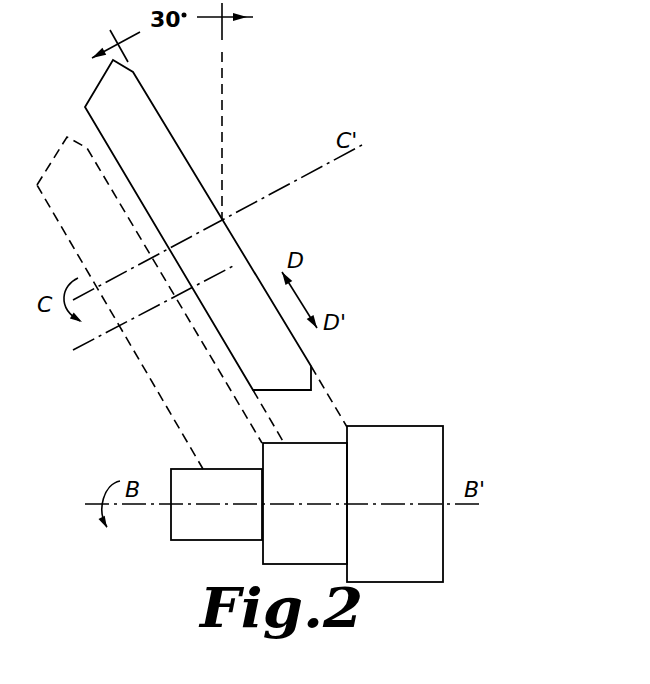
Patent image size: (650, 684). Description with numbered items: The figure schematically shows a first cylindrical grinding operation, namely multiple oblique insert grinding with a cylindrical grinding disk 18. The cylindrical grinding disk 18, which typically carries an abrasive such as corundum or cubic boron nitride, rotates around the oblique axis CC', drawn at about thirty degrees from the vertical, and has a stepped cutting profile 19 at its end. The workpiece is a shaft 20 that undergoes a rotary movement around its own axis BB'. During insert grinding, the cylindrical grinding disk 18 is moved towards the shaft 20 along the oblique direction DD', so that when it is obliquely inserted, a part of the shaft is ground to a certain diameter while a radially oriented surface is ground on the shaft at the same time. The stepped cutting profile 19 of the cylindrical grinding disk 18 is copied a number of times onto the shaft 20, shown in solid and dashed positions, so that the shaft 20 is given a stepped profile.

The cylindrical grinding disk 18 is at (205, 247).
The cutting profile 19 is at (283, 402).
The shaft 20 is at (185, 482).